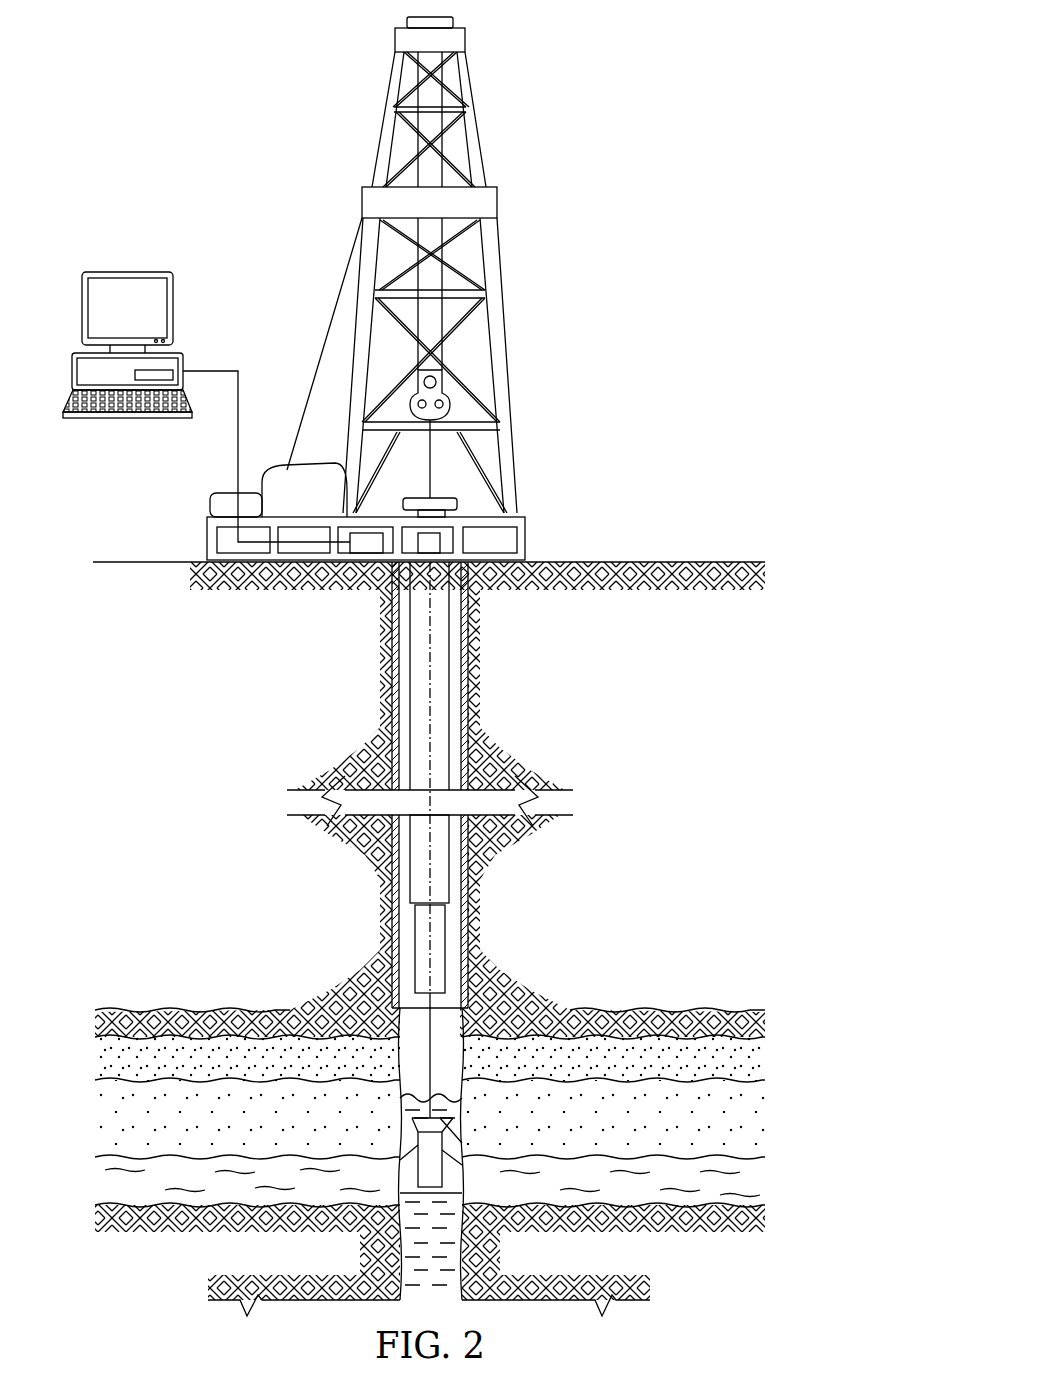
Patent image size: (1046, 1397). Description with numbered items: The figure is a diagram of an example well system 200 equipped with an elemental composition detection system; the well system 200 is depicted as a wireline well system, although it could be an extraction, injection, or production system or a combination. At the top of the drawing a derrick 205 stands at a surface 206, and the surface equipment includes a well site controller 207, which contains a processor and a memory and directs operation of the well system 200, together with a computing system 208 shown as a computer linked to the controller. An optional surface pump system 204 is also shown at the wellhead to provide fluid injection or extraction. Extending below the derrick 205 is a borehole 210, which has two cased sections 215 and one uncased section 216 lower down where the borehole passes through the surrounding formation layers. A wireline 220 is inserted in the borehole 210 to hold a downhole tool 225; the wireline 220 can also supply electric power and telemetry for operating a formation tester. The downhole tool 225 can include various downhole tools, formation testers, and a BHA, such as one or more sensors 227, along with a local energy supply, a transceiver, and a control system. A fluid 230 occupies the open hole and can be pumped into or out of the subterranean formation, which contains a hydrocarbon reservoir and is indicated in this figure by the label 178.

The well system 200 is at (262, 132).
The subterranean formation 178 is at (782, 1133).
The surface pump system 204 is at (434, 548).
The derrick 205 is at (505, 370).
The surface 206 is at (567, 562).
The well site controller 207 is at (367, 548).
The computing system 208 is at (125, 270).
The borehole 210 is at (392, 930).
The cased section 215 is at (449, 862).
The uncased section 216 is at (463, 1052).
The wireline 220 is at (432, 1027).
The downhole tool 225 is at (452, 1145).
The sensor 227 is at (425, 1158).
The fluid 230 is at (400, 1110).